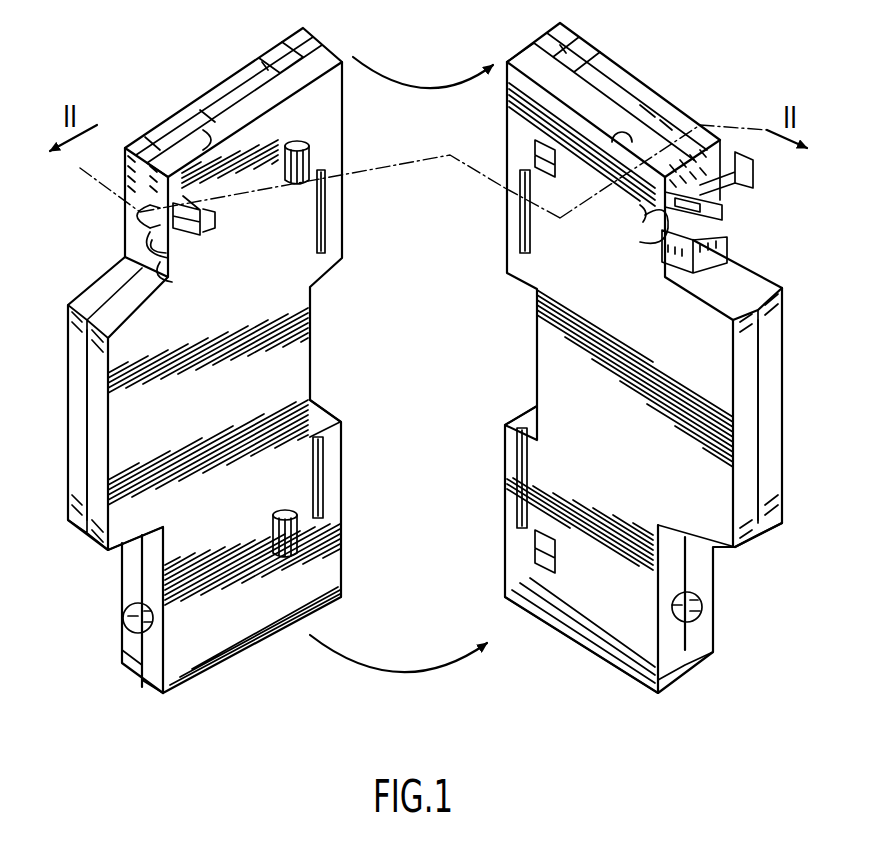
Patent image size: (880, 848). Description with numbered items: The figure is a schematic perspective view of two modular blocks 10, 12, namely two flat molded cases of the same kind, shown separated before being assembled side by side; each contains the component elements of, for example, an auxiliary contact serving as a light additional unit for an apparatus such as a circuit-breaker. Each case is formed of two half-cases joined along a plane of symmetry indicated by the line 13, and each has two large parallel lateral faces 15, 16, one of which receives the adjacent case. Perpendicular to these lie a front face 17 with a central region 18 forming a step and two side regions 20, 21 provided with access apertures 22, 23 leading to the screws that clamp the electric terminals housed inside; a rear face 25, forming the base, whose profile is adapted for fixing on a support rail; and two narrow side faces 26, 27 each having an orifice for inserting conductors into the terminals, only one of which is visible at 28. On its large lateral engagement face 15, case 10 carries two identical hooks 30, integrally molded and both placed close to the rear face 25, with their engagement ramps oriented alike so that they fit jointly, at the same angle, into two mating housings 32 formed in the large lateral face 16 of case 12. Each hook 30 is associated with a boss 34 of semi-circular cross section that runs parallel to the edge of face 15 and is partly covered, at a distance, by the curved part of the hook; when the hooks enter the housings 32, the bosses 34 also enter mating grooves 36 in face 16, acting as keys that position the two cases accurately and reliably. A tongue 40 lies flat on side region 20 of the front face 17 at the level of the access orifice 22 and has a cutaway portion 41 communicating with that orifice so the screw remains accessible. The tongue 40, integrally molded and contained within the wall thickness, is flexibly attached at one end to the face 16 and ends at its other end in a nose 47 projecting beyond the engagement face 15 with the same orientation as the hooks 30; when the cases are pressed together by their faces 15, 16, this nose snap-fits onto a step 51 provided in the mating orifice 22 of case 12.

The modular block 10 is at (276, 655).
The modular block 12 is at (594, 682).
The line 13 is at (200, 135).
The large lateral face 15 is at (214, 636).
The large lateral face 16 is at (118, 598).
The front face 17 is at (105, 414).
The central region 18 is at (77, 462).
The side region 20 is at (150, 173).
The side region 21 is at (133, 563).
The access aperture 22 is at (133, 208).
The access aperture 23 is at (125, 626).
The rear face 25 is at (345, 542).
The narrow side face 26 is at (162, 134).
The narrow side face 27 is at (197, 682).
The orifice 28 is at (253, 97).
The hook 30 is at (306, 160).
The housing 32 is at (556, 176).
The boss 34 is at (326, 225).
The groove 36 is at (521, 211).
The tongue 40 is at (165, 244).
The cutaway portion 41 is at (171, 279).
The nose 47 is at (206, 217).
The step 51 is at (645, 218).